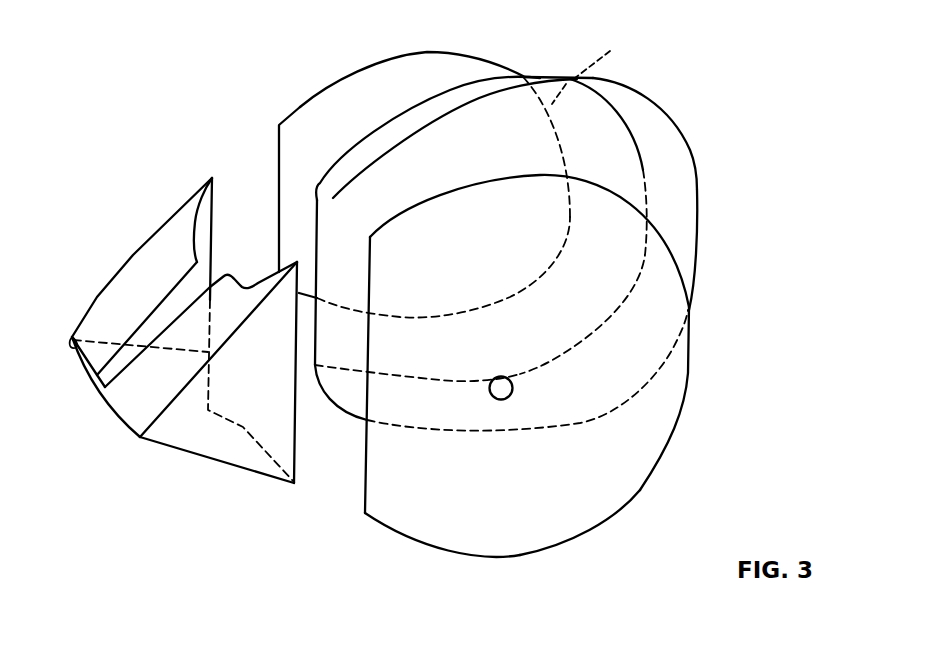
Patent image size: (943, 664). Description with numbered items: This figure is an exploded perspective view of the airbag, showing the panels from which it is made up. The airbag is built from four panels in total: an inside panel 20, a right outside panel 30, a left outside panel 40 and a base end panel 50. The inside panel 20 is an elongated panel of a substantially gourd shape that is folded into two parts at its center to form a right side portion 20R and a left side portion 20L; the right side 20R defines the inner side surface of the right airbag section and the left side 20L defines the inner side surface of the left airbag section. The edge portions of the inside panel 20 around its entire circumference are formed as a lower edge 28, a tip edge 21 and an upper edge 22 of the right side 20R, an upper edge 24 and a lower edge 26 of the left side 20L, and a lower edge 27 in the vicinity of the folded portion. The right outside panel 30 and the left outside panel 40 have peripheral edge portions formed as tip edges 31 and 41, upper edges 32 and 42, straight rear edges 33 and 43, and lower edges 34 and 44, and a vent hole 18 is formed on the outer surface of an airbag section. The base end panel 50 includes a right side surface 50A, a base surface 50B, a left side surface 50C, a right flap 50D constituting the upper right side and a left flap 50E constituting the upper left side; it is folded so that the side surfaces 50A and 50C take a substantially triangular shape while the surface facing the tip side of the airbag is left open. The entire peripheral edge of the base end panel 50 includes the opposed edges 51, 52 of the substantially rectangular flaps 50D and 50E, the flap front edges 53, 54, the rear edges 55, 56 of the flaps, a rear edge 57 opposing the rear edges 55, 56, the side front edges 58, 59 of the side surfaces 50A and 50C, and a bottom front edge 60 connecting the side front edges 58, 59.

The vent hole 18 is at (514, 388).
The inside panel 20 is at (632, 81).
The left side portion 20L is at (538, 72).
The right side portion 20R is at (696, 152).
The tip edge 21 is at (699, 250).
The upper edge 22 is at (469, 100).
The upper edge 24 is at (426, 108).
The lower edge 26 is at (440, 380).
The lower edge 27 is at (326, 398).
The lower edge 28 is at (458, 432).
The right outside panel 30 is at (676, 462).
The tip edge 31 is at (689, 372).
The upper edge 32 is at (508, 175).
The straight rear edge 33 is at (370, 341).
The lower edge 34 is at (442, 552).
The left outside panel 40 is at (307, 82).
The tip edge 41 is at (594, 64).
The upper edge 42 is at (373, 64).
The straight rear edge 43 is at (276, 158).
The lower edge 44 is at (344, 310).
The base end panel 50 is at (209, 488).
The right side surface 50A is at (243, 453).
The base surface 50B is at (120, 427).
The left side surface 50C is at (114, 288).
The right flap 50D is at (214, 357).
The left flap 50E is at (172, 232).
The opposed edge 51 is at (133, 358).
The opposed edge 52 is at (148, 327).
The flap front edge 53 is at (241, 281).
The flap front edge 54 is at (213, 220).
The rear edge 55 is at (118, 410).
The rear edge 56 is at (71, 335).
The rear edge 57 is at (110, 408).
The side front edge 58 is at (298, 481).
The side front edge 59 is at (217, 178).
The bottom front edge 60 is at (256, 440).